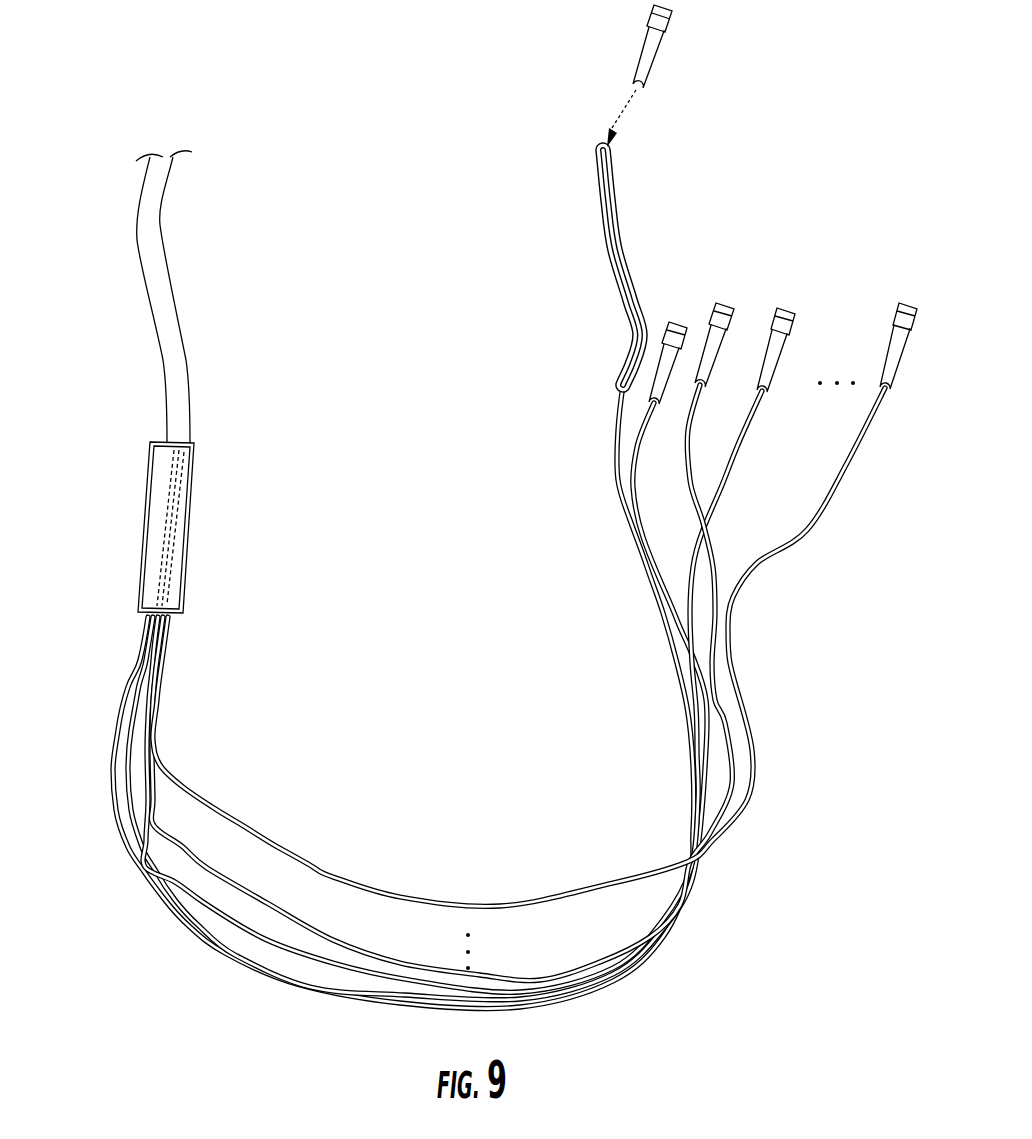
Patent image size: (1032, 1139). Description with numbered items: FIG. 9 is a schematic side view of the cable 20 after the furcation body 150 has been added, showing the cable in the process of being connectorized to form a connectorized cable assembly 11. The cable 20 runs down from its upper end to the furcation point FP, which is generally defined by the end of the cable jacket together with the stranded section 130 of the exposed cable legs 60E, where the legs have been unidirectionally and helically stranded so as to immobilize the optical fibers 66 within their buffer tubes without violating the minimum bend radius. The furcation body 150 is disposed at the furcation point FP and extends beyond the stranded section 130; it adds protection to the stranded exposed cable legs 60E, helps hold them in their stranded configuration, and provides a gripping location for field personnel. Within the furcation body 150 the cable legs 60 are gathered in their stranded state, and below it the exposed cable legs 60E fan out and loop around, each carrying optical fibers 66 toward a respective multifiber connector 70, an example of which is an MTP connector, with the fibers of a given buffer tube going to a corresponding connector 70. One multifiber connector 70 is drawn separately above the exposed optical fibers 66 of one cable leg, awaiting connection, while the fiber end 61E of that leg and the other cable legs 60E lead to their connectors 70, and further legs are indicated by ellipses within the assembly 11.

The connectorized cable assembly 11 is at (130, 87).
The cable 20 is at (150, 283).
The furcation body 150 is at (143, 480).
The stranded section 130 is at (152, 549).
The optical fibers 60 is at (192, 462).
The furcation point FP is at (205, 505).
The optical fibers 66 is at (580, 222).
The fiber end 61E is at (625, 362).
The multifiber connector 70 is at (658, 60).
The exposed cable legs 60E is at (310, 963).